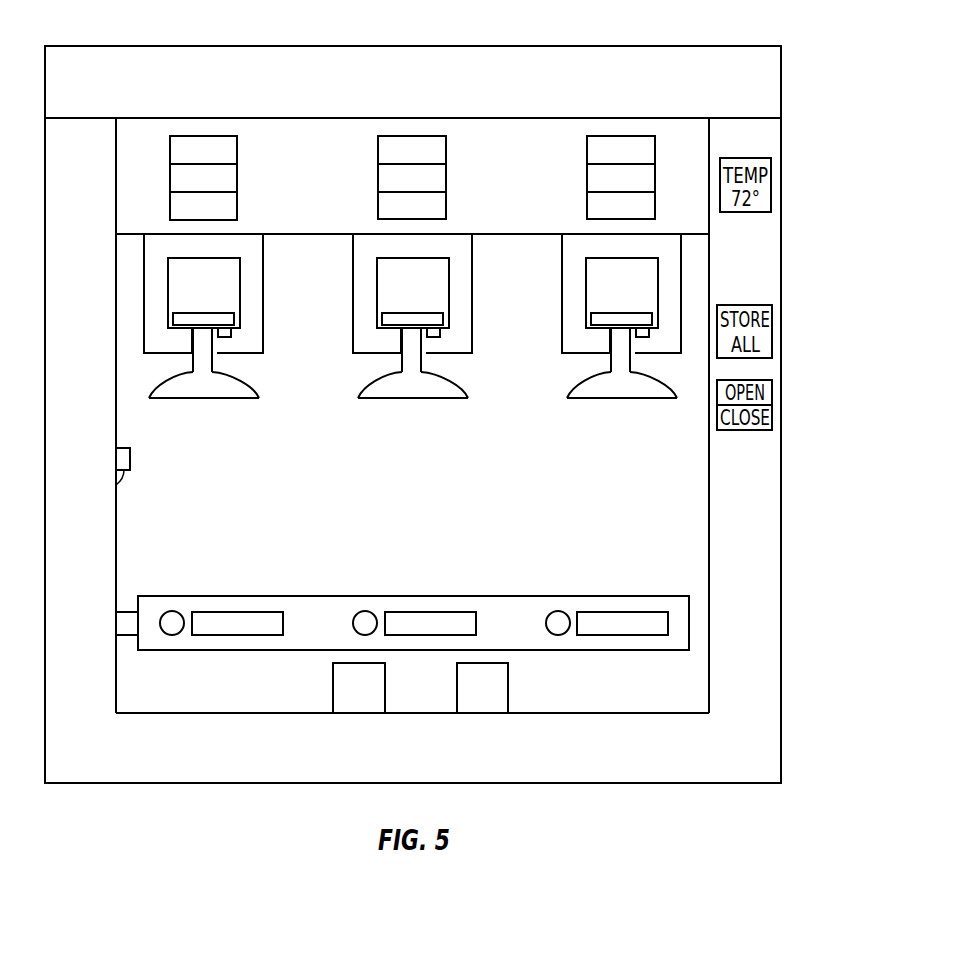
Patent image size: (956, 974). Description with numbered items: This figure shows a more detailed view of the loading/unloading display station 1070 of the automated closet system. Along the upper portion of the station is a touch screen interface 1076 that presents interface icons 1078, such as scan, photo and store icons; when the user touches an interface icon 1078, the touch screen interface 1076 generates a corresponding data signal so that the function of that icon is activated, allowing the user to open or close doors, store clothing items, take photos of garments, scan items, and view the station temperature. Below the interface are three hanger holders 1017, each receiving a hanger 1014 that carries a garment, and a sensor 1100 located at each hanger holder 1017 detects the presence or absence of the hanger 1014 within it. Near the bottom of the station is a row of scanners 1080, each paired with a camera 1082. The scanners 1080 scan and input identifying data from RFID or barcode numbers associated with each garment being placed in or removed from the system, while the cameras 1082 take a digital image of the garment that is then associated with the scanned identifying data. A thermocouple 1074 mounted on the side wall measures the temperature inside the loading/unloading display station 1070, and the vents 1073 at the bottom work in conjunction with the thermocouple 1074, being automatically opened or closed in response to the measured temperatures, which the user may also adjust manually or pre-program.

The loading/unloading display station 1070 is at (541, 31).
The touch screen interface 1076 is at (526, 144).
The interface icon 1078 is at (238, 177).
The hanger holder 1017 is at (264, 291).
The hanger 1014 is at (203, 399).
The sensor 1100 is at (226, 339).
The thermocouple 1074 is at (130, 458).
The camera 1082 is at (171, 610).
The scanner 1080 is at (237, 611).
The vent 1073 is at (333, 695).